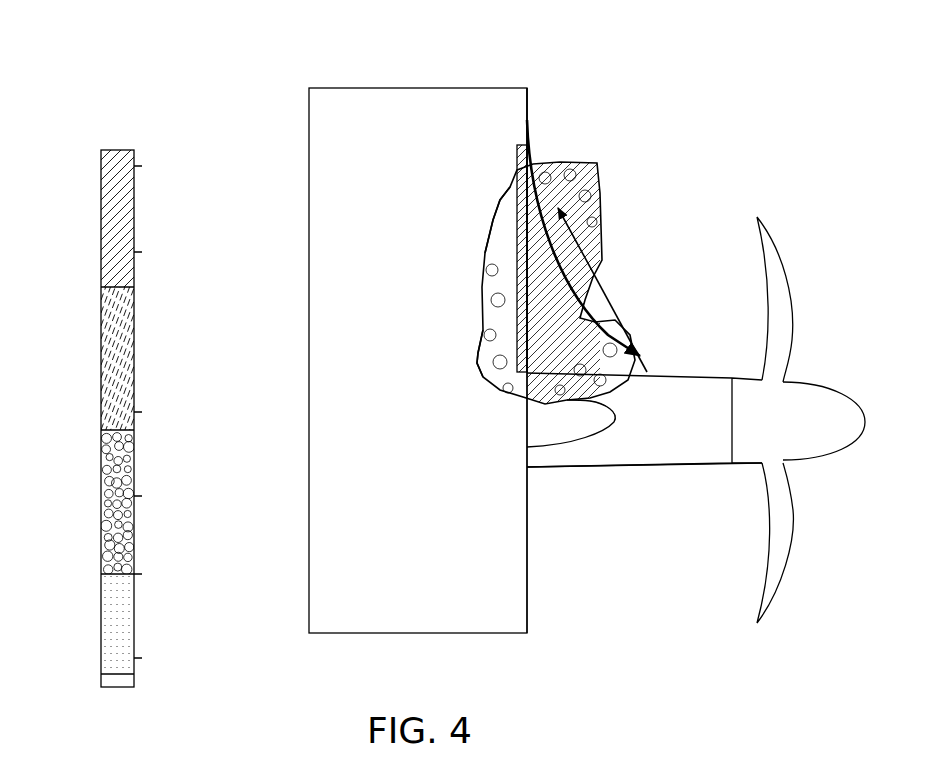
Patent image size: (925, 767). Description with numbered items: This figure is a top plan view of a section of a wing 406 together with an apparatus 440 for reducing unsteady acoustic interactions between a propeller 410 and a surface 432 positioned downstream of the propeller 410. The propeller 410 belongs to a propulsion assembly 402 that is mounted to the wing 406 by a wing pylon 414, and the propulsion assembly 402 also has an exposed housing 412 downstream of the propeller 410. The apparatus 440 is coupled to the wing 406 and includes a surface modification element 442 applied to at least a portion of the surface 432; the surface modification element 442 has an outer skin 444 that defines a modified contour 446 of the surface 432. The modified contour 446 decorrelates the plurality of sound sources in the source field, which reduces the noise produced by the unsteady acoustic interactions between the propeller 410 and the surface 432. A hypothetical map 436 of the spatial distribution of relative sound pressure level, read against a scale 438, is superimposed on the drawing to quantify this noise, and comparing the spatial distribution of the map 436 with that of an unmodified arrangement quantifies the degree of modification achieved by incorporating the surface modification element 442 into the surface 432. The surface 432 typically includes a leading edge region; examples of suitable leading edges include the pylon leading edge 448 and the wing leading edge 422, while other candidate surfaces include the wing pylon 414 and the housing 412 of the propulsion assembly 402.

The propulsion assembly 402 is at (700, 490).
The wing 406 is at (309, 165).
The propeller 410 is at (759, 215).
The housing 412 is at (672, 372).
The wing pylon 414 is at (565, 425).
The wing leading edge 422 is at (529, 89).
The surface 432 is at (487, 255).
The map 436 is at (599, 180).
The scale 438 is at (101, 510).
The apparatus 440 is at (686, 80).
The surface modification element 442 is at (478, 360).
The outer skin 444 is at (529, 130).
The modified contour 446 is at (612, 284).
The pylon leading edge 448 is at (622, 420).